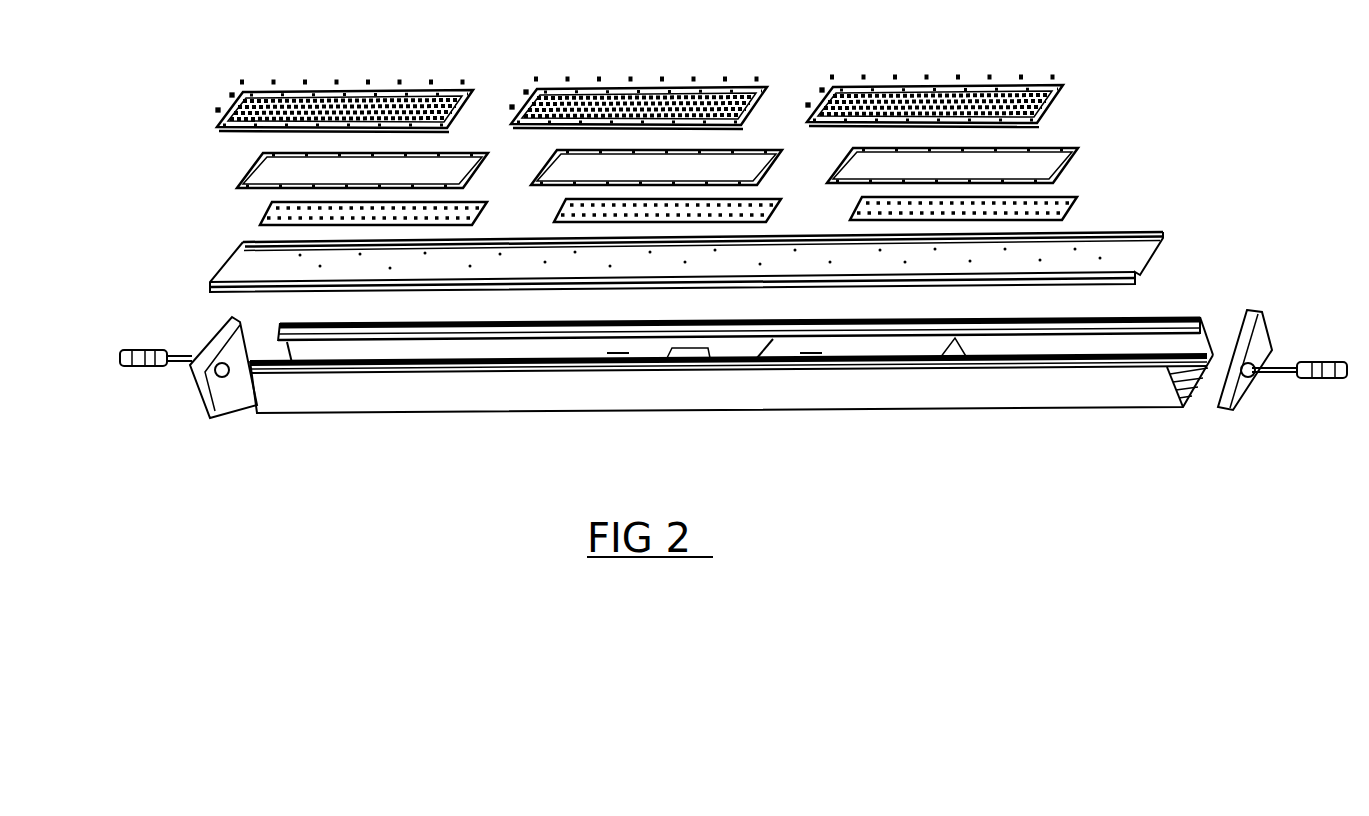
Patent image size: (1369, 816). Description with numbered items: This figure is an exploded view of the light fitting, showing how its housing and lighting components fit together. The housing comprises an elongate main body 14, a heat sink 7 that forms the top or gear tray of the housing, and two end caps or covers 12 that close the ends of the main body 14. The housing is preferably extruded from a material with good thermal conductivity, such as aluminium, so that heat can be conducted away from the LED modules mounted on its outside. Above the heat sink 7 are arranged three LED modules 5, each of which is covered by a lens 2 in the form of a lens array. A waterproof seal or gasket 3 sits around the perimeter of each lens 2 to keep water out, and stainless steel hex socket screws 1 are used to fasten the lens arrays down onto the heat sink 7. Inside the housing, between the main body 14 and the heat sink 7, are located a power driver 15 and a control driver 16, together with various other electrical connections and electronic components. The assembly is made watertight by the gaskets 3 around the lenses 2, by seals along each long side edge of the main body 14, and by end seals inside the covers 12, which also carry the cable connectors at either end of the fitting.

The stainless steel hex socket screw 1 is at (1057, 80).
The lens 2 is at (1060, 95).
The waterproof seal (gasket) 3 is at (1087, 153).
The LED module 5 is at (1075, 205).
The heat sink 7 is at (1128, 262).
The cover 12 is at (1258, 330).
The main body 14 is at (1032, 397).
The power driver 15 is at (810, 353).
The control driver 16 is at (617, 353).